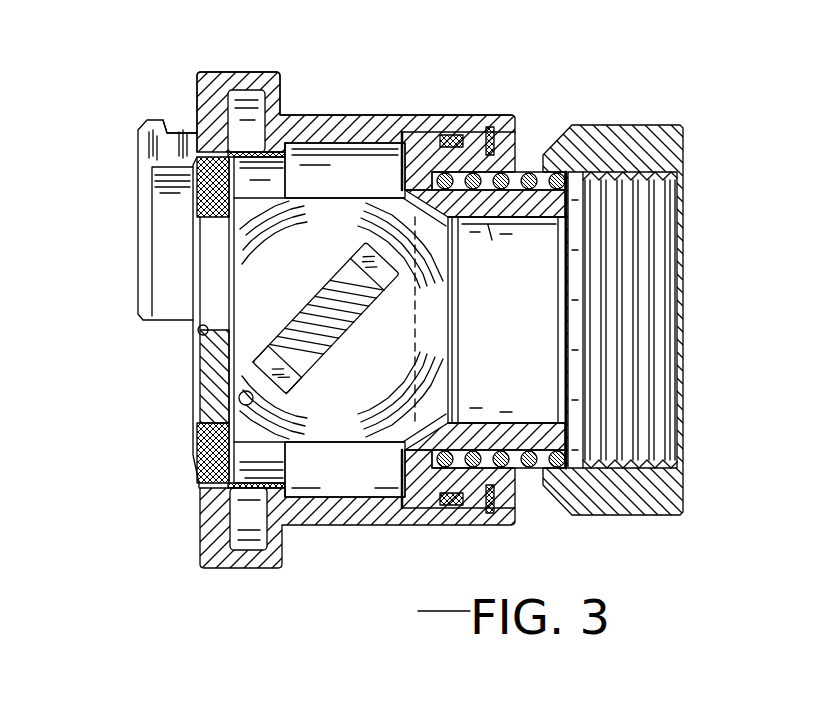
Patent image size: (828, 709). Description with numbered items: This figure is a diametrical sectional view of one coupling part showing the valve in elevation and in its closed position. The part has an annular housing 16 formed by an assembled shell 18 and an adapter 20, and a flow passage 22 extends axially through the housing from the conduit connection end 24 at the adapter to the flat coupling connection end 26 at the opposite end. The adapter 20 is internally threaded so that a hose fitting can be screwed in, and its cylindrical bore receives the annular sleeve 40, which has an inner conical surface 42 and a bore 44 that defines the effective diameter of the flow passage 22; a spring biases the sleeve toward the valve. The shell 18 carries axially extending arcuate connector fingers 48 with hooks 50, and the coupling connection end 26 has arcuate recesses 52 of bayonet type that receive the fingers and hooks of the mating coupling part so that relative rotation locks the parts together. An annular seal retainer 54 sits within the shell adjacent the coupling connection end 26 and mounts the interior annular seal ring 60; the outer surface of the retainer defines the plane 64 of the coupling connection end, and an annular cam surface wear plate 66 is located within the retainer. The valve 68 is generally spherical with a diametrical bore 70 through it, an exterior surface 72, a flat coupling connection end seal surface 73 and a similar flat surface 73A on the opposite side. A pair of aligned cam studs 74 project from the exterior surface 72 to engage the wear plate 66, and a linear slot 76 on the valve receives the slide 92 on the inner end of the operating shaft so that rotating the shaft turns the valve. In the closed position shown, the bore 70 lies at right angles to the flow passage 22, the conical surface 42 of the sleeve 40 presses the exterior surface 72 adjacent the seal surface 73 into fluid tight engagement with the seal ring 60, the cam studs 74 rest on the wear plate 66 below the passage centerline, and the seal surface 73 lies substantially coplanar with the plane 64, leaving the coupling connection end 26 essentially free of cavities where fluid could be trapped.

The annular housing 16 is at (407, 116).
The shell 18 is at (357, 128).
The adapter 20 is at (640, 124).
The flow passage 22 is at (368, 494).
The conduit connection end 24 is at (685, 487).
The coupling connection end 26 is at (198, 483).
The annular sleeve 40 is at (507, 320).
The inner conical surface 42 is at (470, 422).
The sleeve bore 44 is at (537, 216).
The arcuate connector fingers 48 is at (165, 203).
The hooks 50 is at (175, 131).
The arcuate recesses 52 is at (240, 520).
The annular seal retainer 54 is at (203, 432).
The interior annular seal ring 60 is at (203, 241).
The plane 64 is at (200, 380).
The cam surface wear plate 66 is at (235, 251).
The valve 68 is at (298, 197).
The diametrical bore 70 is at (416, 349).
The exterior surface 72 is at (330, 250).
The coupling connection end seal surface 73 is at (198, 332).
The flat surface 73A is at (460, 329).
The cam studs 74 is at (253, 404).
The linear slot 76 is at (303, 378).
The slide 92 is at (352, 268).